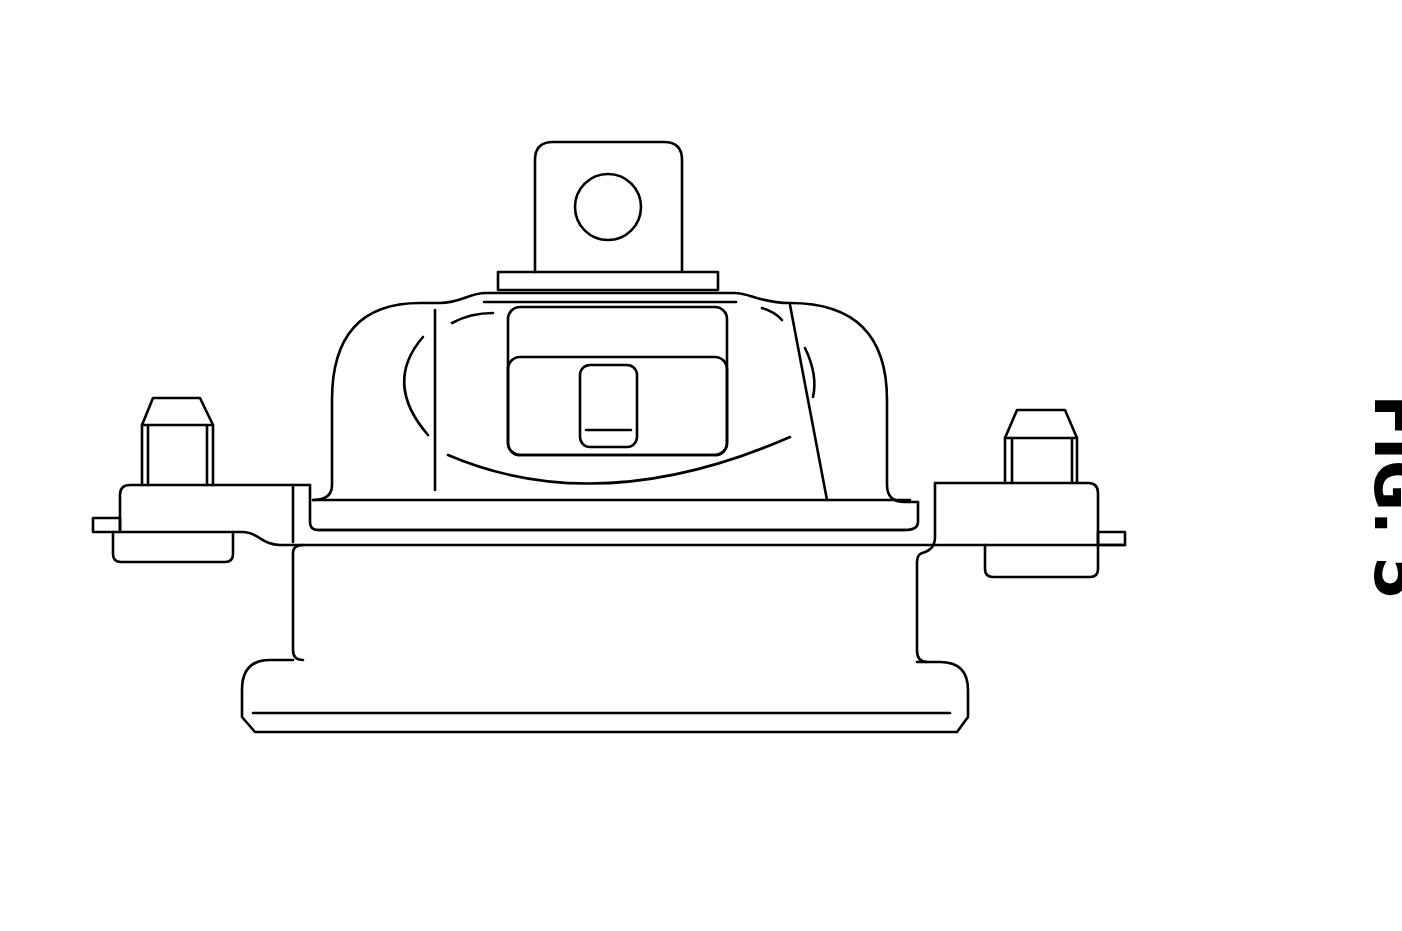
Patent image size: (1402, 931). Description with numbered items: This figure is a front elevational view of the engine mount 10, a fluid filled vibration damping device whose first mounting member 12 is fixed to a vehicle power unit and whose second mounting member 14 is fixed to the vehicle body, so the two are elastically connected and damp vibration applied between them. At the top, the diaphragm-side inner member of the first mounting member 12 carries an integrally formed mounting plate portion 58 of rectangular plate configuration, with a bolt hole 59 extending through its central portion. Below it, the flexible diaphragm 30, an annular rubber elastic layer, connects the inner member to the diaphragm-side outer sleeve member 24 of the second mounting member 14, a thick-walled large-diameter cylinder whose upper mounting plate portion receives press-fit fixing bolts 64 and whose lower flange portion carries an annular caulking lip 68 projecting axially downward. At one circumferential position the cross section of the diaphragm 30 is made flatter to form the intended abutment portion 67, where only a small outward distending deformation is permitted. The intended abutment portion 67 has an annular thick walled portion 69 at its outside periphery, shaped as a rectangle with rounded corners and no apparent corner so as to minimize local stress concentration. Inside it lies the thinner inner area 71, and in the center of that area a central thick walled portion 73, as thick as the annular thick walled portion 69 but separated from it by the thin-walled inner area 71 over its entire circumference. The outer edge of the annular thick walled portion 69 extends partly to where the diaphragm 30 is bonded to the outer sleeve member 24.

The engine mount 10 is at (458, 133).
The first mounting member 12 is at (715, 257).
The second mounting member 14 is at (280, 607).
The diaphragm-side outer sleeve member 24 is at (885, 617).
The flexible diaphragm 30 is at (368, 366).
The mounting plate portion 58 is at (575, 152).
The bolt hole 59 is at (615, 185).
The fixing bolt 64 is at (172, 413).
The intended abutment portion 67 is at (822, 388).
The annular caulking lip 68 is at (738, 693).
The annular thick walled portion 69 is at (460, 383).
The inner area 71 is at (547, 530).
The central thick walled portion 73 is at (613, 402).